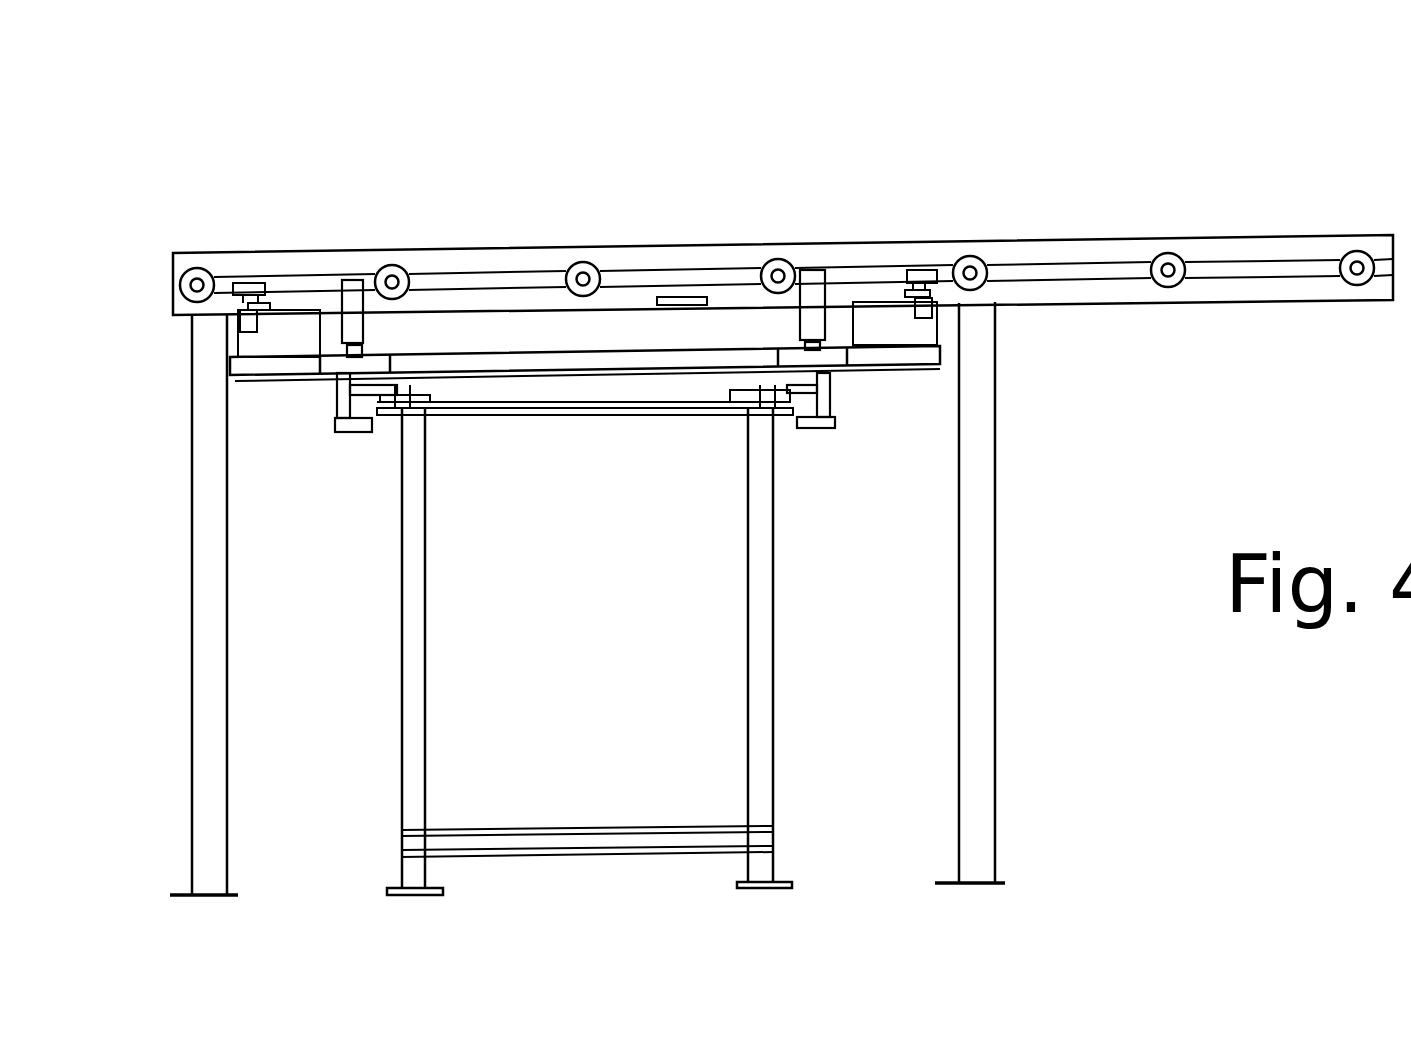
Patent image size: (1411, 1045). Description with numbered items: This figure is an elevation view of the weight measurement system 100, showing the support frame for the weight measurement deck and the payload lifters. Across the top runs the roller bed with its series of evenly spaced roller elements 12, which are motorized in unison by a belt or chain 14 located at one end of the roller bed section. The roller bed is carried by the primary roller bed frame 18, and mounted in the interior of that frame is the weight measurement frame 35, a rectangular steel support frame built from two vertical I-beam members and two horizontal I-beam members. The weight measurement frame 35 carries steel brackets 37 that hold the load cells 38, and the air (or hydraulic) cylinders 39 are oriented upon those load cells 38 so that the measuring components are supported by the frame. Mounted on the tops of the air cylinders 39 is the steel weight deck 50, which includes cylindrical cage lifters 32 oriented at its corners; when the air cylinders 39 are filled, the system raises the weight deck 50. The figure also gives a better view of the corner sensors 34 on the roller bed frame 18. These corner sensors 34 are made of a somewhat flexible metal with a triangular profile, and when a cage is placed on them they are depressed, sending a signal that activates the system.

The weight measurement system 100 is at (251, 222).
The roller elements 12 is at (982, 257).
The belt or chain 14 is at (1267, 277).
The roller bed frame 18 is at (195, 607).
The cylindrical cage lifters 32 is at (353, 280).
The corner sensors 34 is at (243, 280).
The weight measurement frame 35 is at (758, 695).
The steel brackets 37 is at (418, 424).
The load cells 38 is at (380, 385).
The air cylinders 39 is at (355, 432).
The weight deck 50 is at (290, 380).